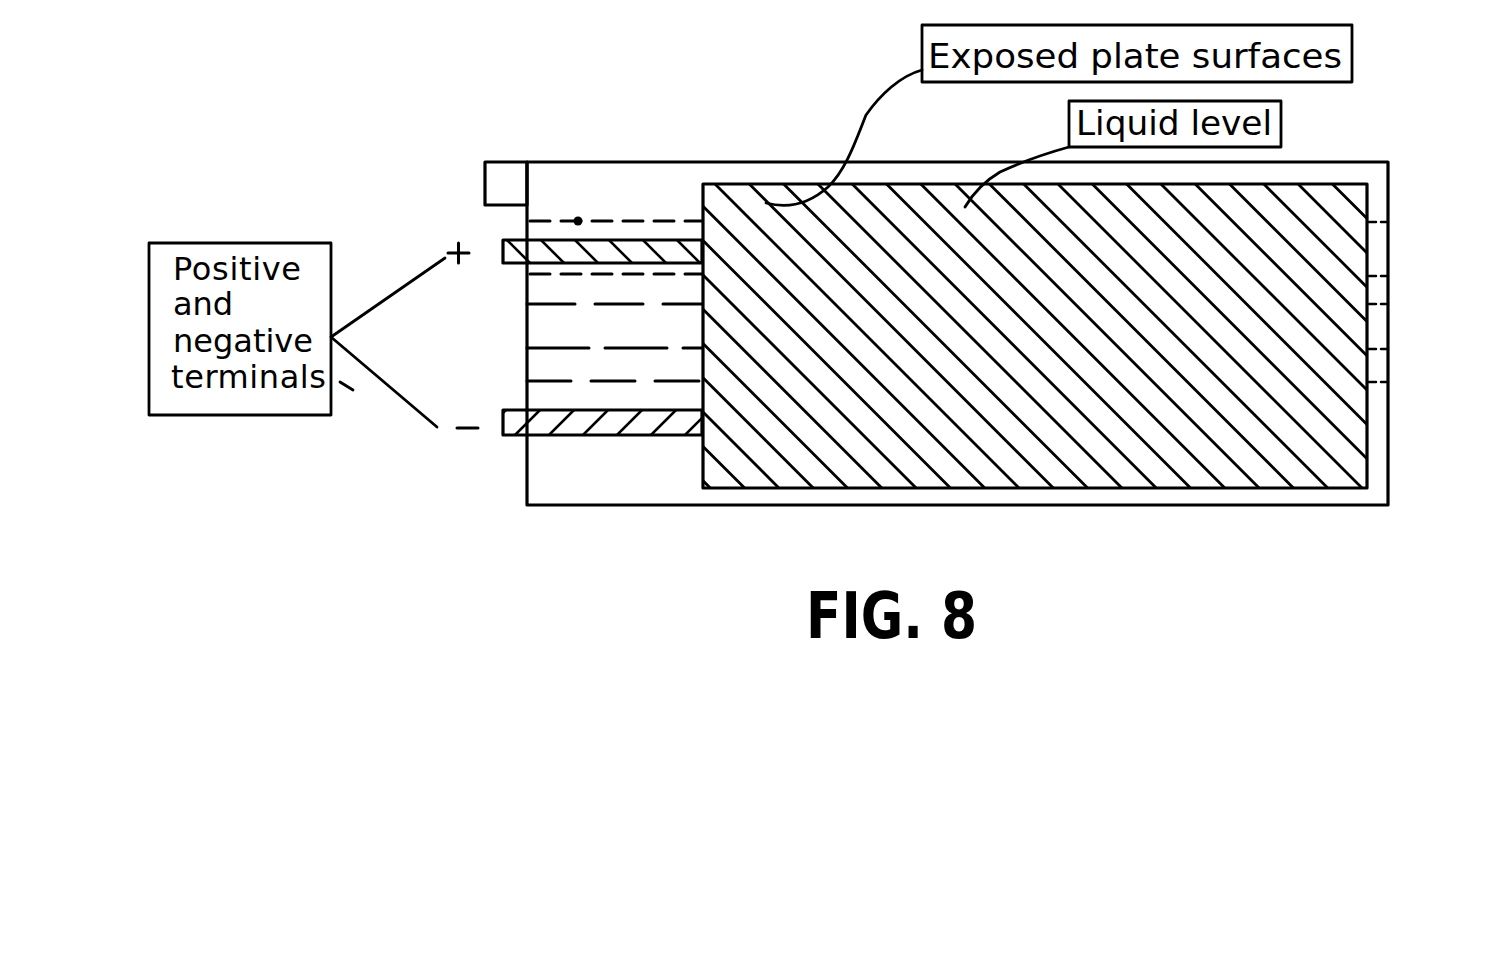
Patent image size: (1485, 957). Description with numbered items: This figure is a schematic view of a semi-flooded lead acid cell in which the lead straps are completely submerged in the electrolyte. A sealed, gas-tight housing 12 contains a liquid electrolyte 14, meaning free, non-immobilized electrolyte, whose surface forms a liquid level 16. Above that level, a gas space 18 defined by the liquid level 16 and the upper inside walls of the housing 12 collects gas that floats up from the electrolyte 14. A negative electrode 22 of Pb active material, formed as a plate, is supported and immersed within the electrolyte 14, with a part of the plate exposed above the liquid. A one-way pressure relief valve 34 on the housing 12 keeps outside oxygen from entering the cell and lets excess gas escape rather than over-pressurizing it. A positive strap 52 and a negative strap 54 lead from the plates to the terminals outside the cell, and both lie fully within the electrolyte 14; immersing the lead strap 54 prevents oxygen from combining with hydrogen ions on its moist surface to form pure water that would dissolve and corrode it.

The housing 12 is at (1388, 435).
The liquid electrolyte 14 is at (560, 472).
The liquid level 16 is at (578, 218).
The gas space 18 is at (658, 188).
The negative electrode 22 is at (1310, 490).
The one-way pressure relief valve 34 is at (485, 193).
The positive strap 52 is at (572, 264).
The negative strap 54 is at (582, 436).